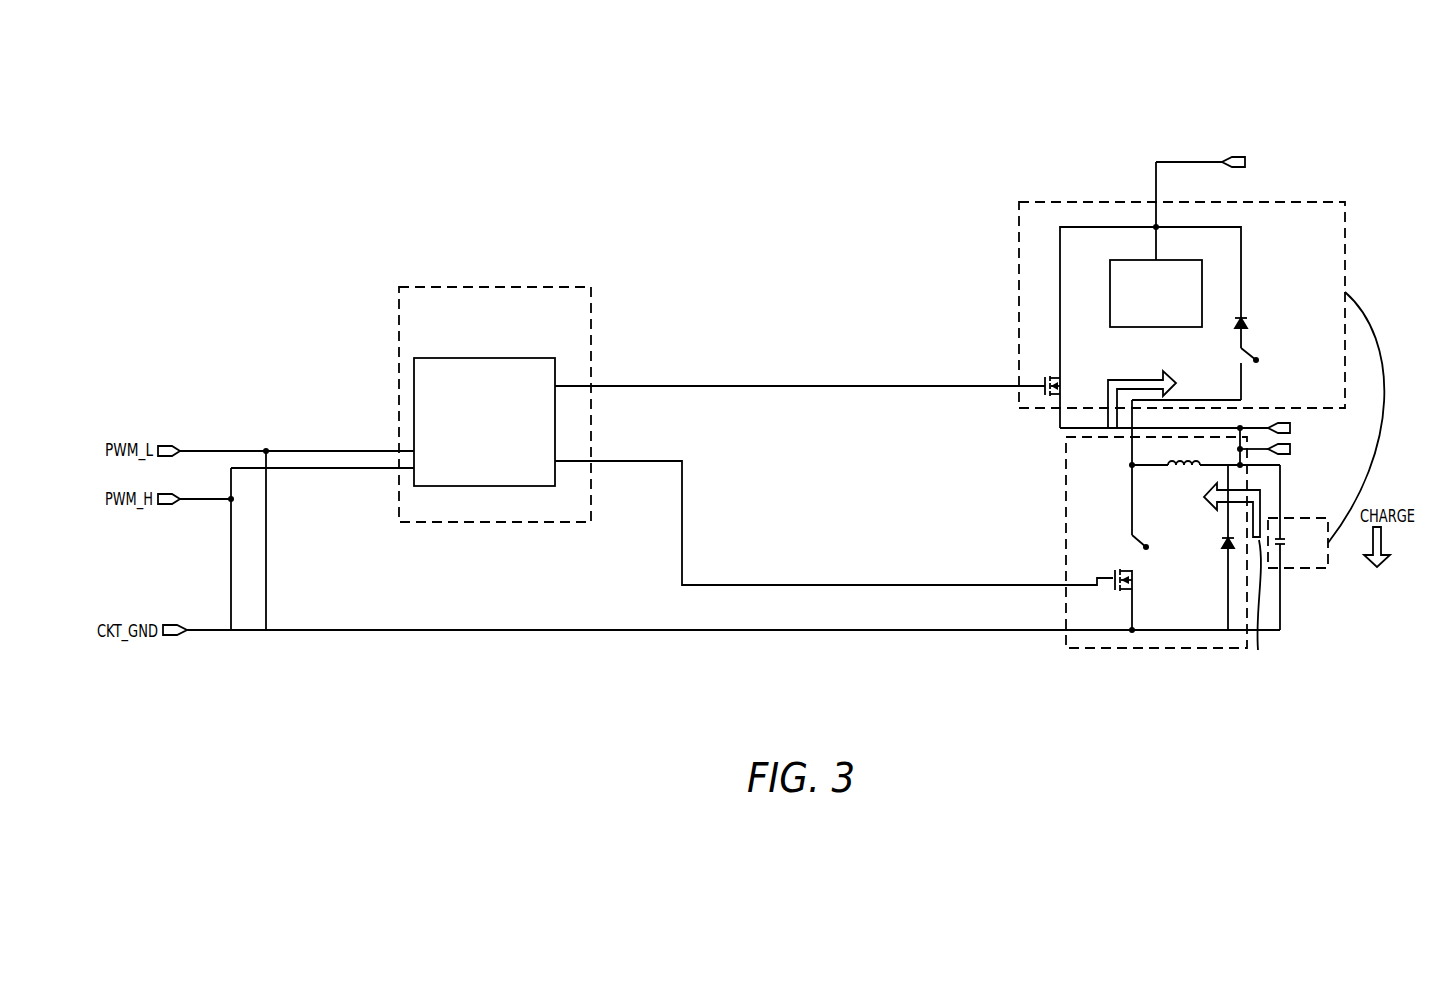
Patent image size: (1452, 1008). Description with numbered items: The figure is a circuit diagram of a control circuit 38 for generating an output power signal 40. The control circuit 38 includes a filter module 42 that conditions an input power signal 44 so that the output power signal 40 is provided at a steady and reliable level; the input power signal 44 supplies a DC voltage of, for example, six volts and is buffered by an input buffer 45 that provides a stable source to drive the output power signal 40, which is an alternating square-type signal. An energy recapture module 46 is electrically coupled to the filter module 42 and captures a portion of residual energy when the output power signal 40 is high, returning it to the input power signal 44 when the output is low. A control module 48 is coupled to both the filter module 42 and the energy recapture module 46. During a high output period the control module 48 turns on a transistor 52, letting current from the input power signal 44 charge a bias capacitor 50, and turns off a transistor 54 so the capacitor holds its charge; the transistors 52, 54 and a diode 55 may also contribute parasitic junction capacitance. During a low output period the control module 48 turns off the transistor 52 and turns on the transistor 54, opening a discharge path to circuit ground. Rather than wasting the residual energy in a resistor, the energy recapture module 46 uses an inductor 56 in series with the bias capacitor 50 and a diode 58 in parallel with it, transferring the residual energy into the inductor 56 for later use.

The control circuit 38 is at (288, 70).
The output power signal 40 is at (1190, 418).
The filter module 42 is at (1019, 265).
The input power signal 44 is at (1182, 148).
The input buffer 45 is at (1163, 305).
The energy recapture module 46 is at (1066, 473).
The control module 48 is at (591, 292).
The bias capacitor 50 is at (1300, 568).
The transistor 52 is at (1062, 386).
The transistor 54 is at (1134, 582).
The diode 55 is at (1251, 323).
The inductor 56 is at (1184, 474).
The diode 58 is at (1220, 547).